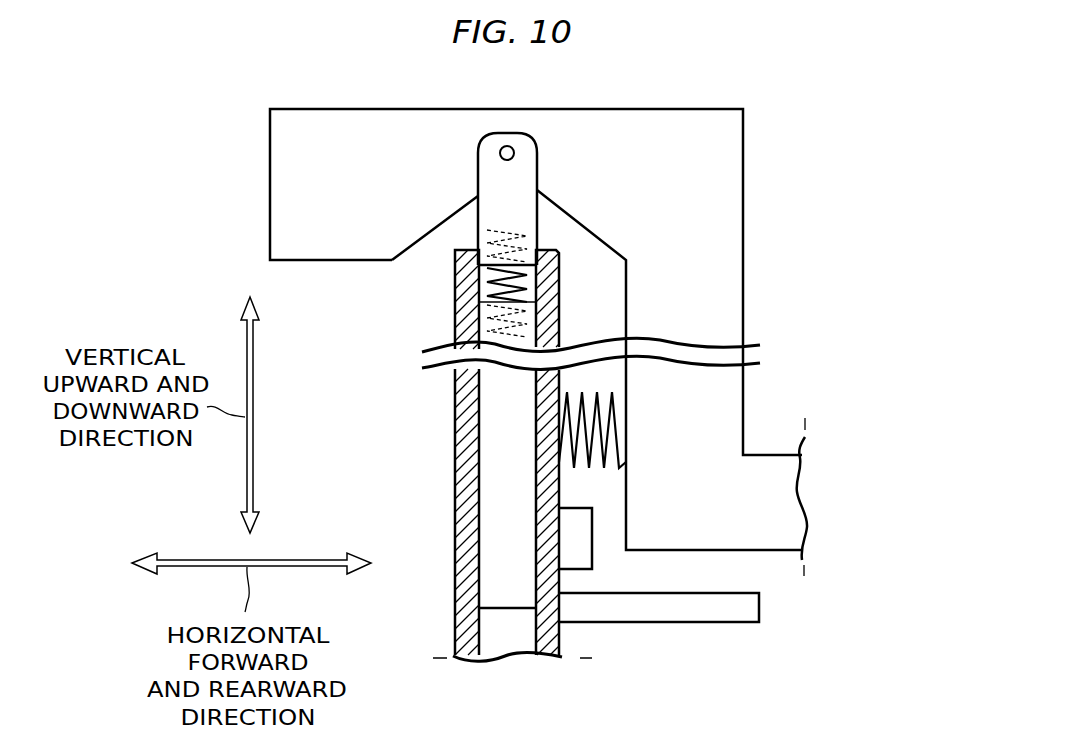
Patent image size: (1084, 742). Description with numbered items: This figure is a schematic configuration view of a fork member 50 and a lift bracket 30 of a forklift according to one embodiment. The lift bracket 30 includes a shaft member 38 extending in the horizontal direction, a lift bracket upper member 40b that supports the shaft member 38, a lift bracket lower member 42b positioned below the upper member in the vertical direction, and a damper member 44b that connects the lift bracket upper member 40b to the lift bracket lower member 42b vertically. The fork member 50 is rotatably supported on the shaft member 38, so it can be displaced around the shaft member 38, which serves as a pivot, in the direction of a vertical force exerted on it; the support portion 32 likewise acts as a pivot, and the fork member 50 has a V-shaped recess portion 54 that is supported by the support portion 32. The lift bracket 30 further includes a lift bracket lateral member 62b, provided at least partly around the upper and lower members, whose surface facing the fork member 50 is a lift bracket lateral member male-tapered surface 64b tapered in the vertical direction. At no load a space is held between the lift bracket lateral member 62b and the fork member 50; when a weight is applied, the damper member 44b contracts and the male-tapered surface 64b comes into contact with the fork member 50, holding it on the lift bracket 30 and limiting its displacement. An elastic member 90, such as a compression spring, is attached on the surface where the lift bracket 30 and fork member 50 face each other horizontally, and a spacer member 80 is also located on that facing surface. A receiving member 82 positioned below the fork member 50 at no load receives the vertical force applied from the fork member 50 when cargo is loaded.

The lift bracket 30 is at (502, 535).
The support portion 32 is at (531, 152).
The shaft member 38 is at (506, 150).
The lift bracket upper member 40b is at (490, 218).
The lift bracket lower member 42b is at (503, 443).
The damper member 44b is at (493, 292).
The fork member 50 is at (693, 185).
The V-shaped recess portion 54 is at (430, 240).
The lift bracket lateral member 62b is at (463, 400).
The lift bracket lateral member male-tapered surface 64b is at (543, 247).
The spacer member 80 is at (585, 556).
The receiving member 82 is at (745, 608).
The elastic member 90 is at (613, 403).